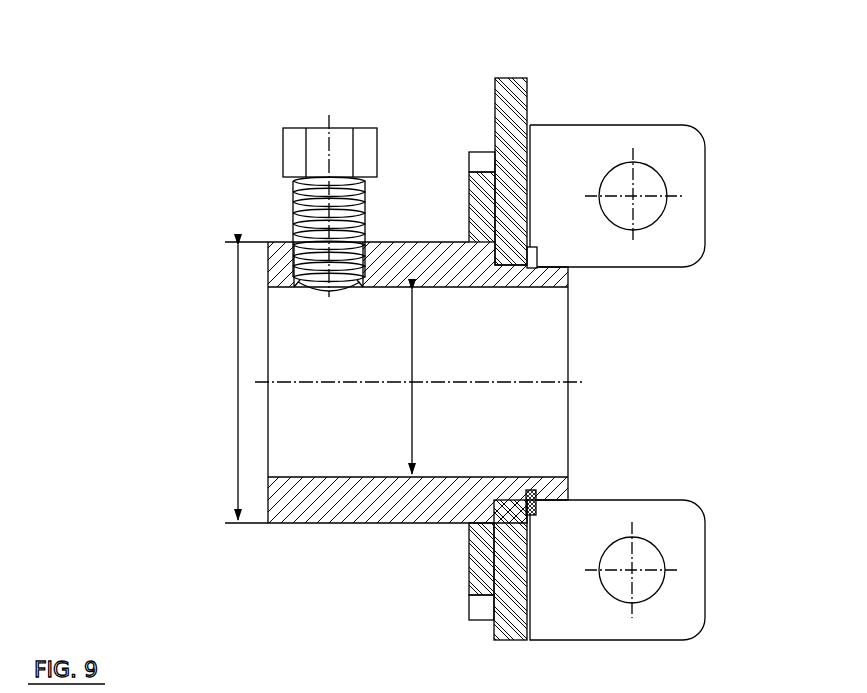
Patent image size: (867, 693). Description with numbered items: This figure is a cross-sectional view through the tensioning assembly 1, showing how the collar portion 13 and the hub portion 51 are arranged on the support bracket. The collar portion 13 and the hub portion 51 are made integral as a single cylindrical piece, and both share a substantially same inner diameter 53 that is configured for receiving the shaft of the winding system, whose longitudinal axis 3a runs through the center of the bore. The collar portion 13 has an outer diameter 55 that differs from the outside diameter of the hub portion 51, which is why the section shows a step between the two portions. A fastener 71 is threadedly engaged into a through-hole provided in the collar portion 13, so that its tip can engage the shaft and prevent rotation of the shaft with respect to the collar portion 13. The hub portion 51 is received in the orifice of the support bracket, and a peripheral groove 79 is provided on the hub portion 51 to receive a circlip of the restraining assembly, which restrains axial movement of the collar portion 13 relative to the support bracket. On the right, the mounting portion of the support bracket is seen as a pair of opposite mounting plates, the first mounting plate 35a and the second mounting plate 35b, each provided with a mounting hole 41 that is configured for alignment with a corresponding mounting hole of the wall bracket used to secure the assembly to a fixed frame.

The tensioning assembly 1 is at (776, 42).
The collar portion 13 is at (343, 534).
The longitudinal axis 3a is at (532, 379).
The hub portion 51 is at (578, 488).
The inner diameter 53 is at (414, 354).
The outer diameter of collar portion 55 is at (237, 323).
The fastener 71 is at (369, 215).
The peripheral groove 79 is at (539, 486).
The first mounting plate 35a is at (702, 127).
The second mounting plate 35b is at (702, 502).
The mounting hole 41 is at (670, 187).